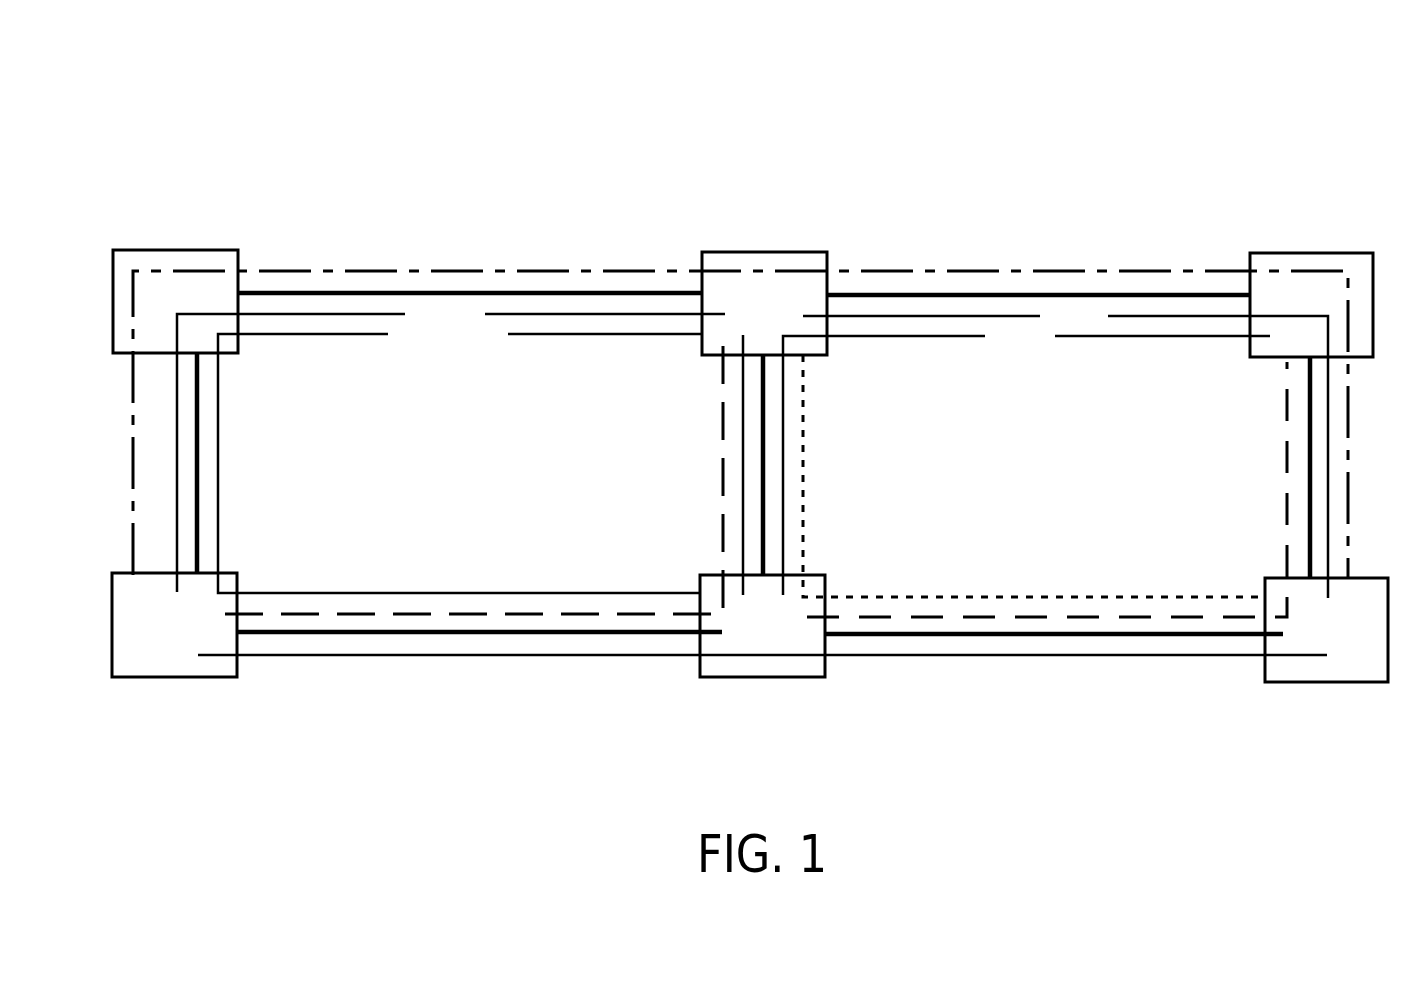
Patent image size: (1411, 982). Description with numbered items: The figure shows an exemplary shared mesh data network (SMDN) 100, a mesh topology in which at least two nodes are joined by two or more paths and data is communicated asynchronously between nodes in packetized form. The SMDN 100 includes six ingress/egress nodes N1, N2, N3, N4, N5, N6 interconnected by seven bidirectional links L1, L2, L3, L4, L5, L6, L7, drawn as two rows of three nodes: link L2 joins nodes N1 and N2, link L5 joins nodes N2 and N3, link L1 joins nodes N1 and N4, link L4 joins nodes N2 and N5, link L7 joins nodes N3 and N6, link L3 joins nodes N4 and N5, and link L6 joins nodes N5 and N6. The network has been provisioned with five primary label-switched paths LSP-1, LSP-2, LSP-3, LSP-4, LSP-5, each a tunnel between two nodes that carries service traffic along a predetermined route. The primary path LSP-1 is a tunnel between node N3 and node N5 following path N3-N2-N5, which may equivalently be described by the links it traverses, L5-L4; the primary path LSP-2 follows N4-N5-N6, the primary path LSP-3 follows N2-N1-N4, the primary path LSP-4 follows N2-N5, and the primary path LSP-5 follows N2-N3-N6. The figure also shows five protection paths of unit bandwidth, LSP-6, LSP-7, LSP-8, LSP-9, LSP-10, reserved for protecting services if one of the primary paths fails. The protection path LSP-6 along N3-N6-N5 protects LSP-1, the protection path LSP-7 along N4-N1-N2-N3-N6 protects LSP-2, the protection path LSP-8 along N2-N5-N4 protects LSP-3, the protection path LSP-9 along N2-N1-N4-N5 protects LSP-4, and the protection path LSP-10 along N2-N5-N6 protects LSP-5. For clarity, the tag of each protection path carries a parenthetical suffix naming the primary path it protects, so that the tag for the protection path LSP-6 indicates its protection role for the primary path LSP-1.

The shared mesh data network 100 is at (1338, 71).
The ingress/egress node N1 is at (175, 301).
The ingress/egress node N2 is at (764, 303).
The ingress/egress node N3 is at (1311, 305).
The ingress/egress node N4 is at (174, 625).
The ingress/egress node N5 is at (762, 626).
The ingress/egress node N6 is at (1326, 630).
The bidirectional link L1 is at (239, 463).
The bidirectional link L2 is at (470, 256).
The bidirectional link L3 is at (479, 670).
The bidirectional link L4 is at (815, 465).
The bidirectional link L5 is at (1038, 259).
The bidirectional link L6 is at (1054, 674).
The bidirectional link L7 is at (1268, 467).
The primary label-switched path LSP-1 is at (1026, 460).
The primary label-switched path LSP-2 is at (553, 655).
The primary label-switched path LSP-3 is at (451, 447).
The primary label-switched path LSP-4 is at (743, 420).
The primary label-switched path LSP-5 is at (1065, 451).
The protection path LSP-6 is at (958, 617).
The protection path LSP-7 is at (133, 432).
The protection path LSP-8 is at (393, 613).
The protection path LSP-9 is at (460, 459).
The protection path LSP-10 is at (903, 597).